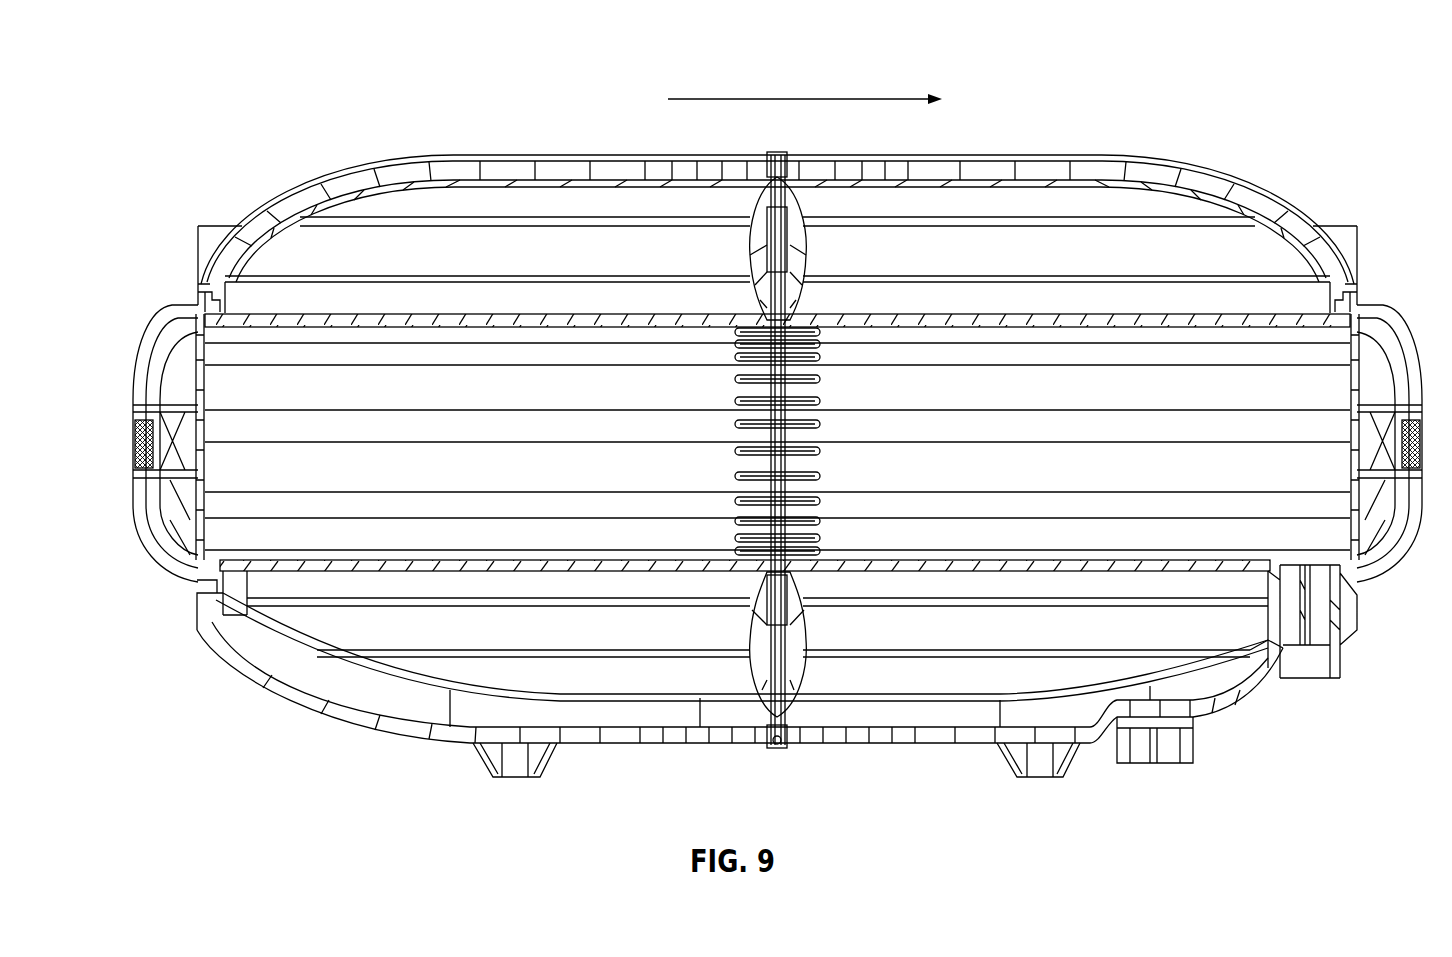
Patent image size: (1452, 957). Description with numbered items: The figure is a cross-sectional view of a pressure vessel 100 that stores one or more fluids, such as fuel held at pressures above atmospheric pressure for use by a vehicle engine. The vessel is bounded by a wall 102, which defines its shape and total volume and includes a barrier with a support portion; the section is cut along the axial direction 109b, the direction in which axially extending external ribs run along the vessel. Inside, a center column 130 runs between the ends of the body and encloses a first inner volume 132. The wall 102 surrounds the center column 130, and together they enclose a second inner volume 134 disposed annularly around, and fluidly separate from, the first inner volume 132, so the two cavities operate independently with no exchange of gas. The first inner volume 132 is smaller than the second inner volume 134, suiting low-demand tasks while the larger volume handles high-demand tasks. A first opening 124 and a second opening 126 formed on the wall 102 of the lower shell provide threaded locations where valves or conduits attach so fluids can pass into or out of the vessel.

The pressure vessel 100 is at (206, 111).
The wall 102 is at (932, 730).
The axial direction 109b is at (945, 79).
The first opening 124 is at (1117, 745).
The second opening 126 is at (1343, 660).
The center column 130 is at (307, 568).
The first inner volume 132 is at (257, 395).
The second inner volume 134 is at (320, 630).